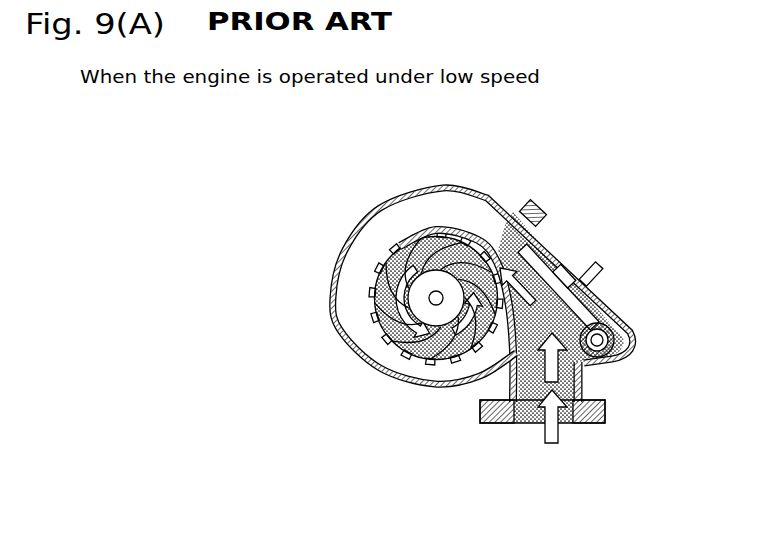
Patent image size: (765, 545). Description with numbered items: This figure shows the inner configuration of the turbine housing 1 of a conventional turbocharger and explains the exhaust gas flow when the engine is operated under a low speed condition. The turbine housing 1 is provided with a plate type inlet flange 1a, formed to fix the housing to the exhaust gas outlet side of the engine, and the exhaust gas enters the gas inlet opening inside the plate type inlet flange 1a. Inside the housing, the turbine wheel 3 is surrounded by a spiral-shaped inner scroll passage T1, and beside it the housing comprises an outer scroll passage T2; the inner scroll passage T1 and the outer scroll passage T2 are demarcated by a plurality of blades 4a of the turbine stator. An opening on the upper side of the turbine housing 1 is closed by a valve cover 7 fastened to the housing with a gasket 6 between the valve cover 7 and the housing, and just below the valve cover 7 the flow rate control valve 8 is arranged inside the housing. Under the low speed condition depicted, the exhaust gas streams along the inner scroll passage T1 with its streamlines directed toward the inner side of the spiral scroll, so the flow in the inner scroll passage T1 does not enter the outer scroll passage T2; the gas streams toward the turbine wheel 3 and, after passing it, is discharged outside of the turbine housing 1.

The turbine housing 1 is at (437, 188).
The plate type inlet flange 1a is at (605, 412).
The turbine wheel 3 is at (472, 362).
The blades 4a is at (442, 368).
The gasket 6 is at (547, 200).
The valve cover 7 is at (603, 304).
The flow rate control valve 8 is at (630, 325).
The inner scroll passage T1 is at (373, 293).
The outer scroll passage T2 is at (378, 350).